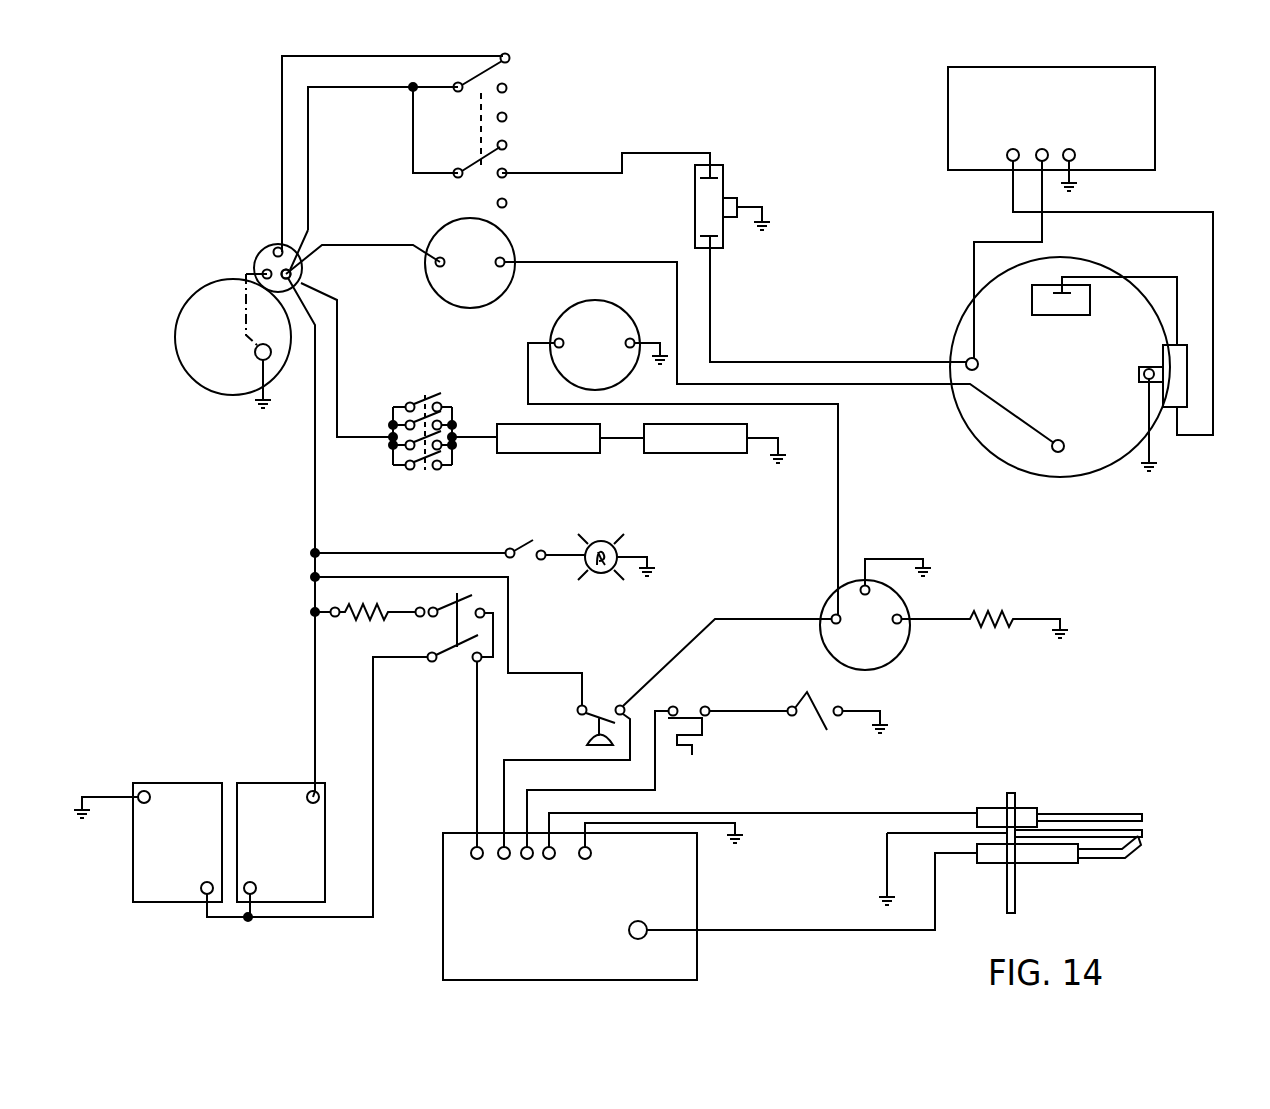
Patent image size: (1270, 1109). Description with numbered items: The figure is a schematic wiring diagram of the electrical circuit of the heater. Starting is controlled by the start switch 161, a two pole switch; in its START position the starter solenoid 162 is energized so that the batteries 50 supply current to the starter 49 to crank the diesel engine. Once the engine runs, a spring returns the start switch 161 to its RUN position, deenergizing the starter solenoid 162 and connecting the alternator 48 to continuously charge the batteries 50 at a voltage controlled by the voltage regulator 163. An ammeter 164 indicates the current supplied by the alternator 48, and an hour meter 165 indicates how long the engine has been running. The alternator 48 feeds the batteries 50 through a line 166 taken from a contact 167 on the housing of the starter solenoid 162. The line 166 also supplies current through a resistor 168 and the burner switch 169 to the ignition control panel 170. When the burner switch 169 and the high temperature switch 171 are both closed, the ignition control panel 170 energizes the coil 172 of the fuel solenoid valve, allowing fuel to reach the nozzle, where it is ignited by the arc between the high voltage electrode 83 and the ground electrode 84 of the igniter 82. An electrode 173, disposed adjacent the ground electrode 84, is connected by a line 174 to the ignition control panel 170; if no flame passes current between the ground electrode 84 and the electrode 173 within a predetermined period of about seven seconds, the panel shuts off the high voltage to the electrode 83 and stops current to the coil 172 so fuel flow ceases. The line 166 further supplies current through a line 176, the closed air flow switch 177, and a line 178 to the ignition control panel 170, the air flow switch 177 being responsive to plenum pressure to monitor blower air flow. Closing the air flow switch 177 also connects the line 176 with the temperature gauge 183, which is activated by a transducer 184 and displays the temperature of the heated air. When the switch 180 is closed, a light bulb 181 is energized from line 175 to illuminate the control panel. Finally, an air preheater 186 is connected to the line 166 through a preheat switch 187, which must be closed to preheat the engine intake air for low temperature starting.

The alternator 48 is at (978, 441).
The starter 49 is at (177, 357).
The batteries 50 is at (132, 862).
The igniter 82 is at (1054, 832).
The high voltage electrode 83 is at (1112, 859).
The ground electrode 84 is at (1103, 831).
The start switch 161 is at (474, 184).
The starter solenoid 162 is at (255, 257).
The voltage regulator 163 is at (1155, 125).
The ammeter 164 is at (437, 297).
The hour meter 165 is at (603, 302).
The line 166 is at (313, 481).
The contact 167 is at (291, 272).
The resistor 168 is at (390, 619).
The burner switch 169 is at (442, 601).
The ignition control panel 170 is at (700, 893).
The high temperature switch 171 is at (688, 712).
The coil 172 is at (815, 727).
The electrode 173 is at (1078, 815).
The line 174 is at (862, 813).
The line 175 is at (418, 551).
The line 176 is at (556, 673).
The air flow switch 177 is at (590, 723).
The line 178 is at (578, 762).
The switch 180 is at (528, 543).
The light bulb 181 is at (626, 546).
The temperature gauge 183 is at (900, 651).
The transducer 184 is at (1000, 612).
The air preheater 186 is at (717, 454).
The preheat switch 187 is at (412, 390).